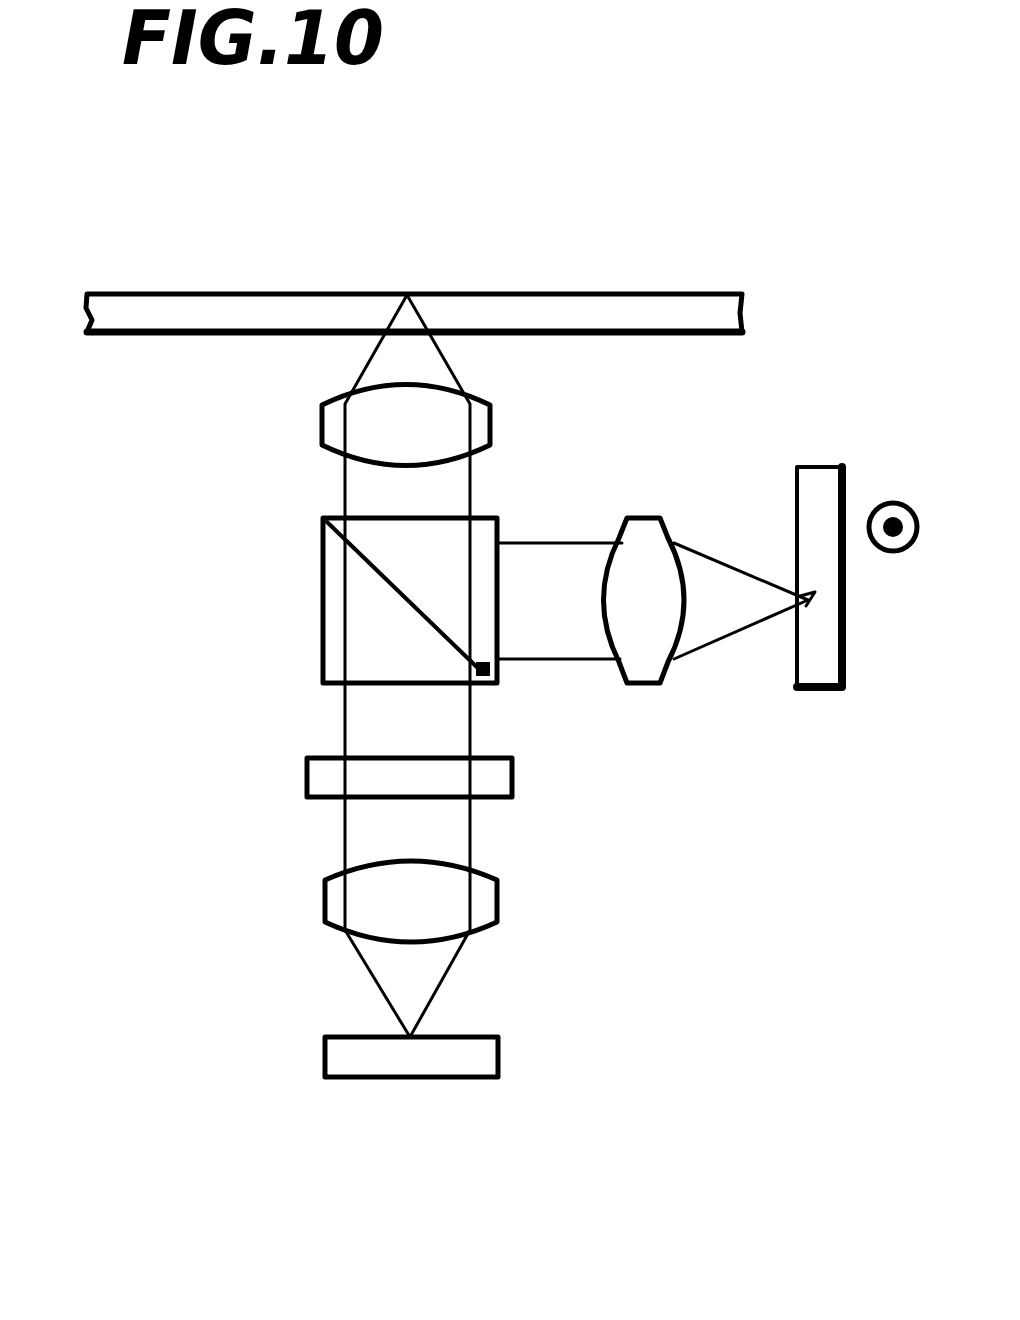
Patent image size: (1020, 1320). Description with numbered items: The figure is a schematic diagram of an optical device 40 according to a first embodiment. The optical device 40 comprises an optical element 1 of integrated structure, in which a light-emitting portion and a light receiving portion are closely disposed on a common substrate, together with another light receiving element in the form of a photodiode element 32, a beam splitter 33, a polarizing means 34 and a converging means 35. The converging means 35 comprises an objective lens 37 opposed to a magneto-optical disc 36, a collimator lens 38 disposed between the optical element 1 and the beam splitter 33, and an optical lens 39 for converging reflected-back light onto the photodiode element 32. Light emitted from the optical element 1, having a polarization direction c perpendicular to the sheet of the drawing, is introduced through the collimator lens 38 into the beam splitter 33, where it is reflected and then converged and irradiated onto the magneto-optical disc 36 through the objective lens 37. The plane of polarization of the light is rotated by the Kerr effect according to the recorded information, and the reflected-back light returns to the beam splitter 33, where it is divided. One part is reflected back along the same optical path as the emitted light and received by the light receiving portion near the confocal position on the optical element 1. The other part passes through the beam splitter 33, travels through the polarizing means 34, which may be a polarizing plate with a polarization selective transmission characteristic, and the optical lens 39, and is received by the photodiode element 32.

The optical element 1 is at (820, 688).
The polarization direction c is at (893, 503).
The photodiode element 32 is at (460, 1057).
The beam splitter 33 is at (323, 607).
The polarizing means 34 is at (490, 773).
The converging means 35 is at (728, 416).
The magneto-optical disc 36 is at (585, 312).
The objective lens 37 is at (490, 422).
The collimator lens 38 is at (641, 562).
The optical lens 39 is at (445, 896).
The optical device 40 is at (741, 946).